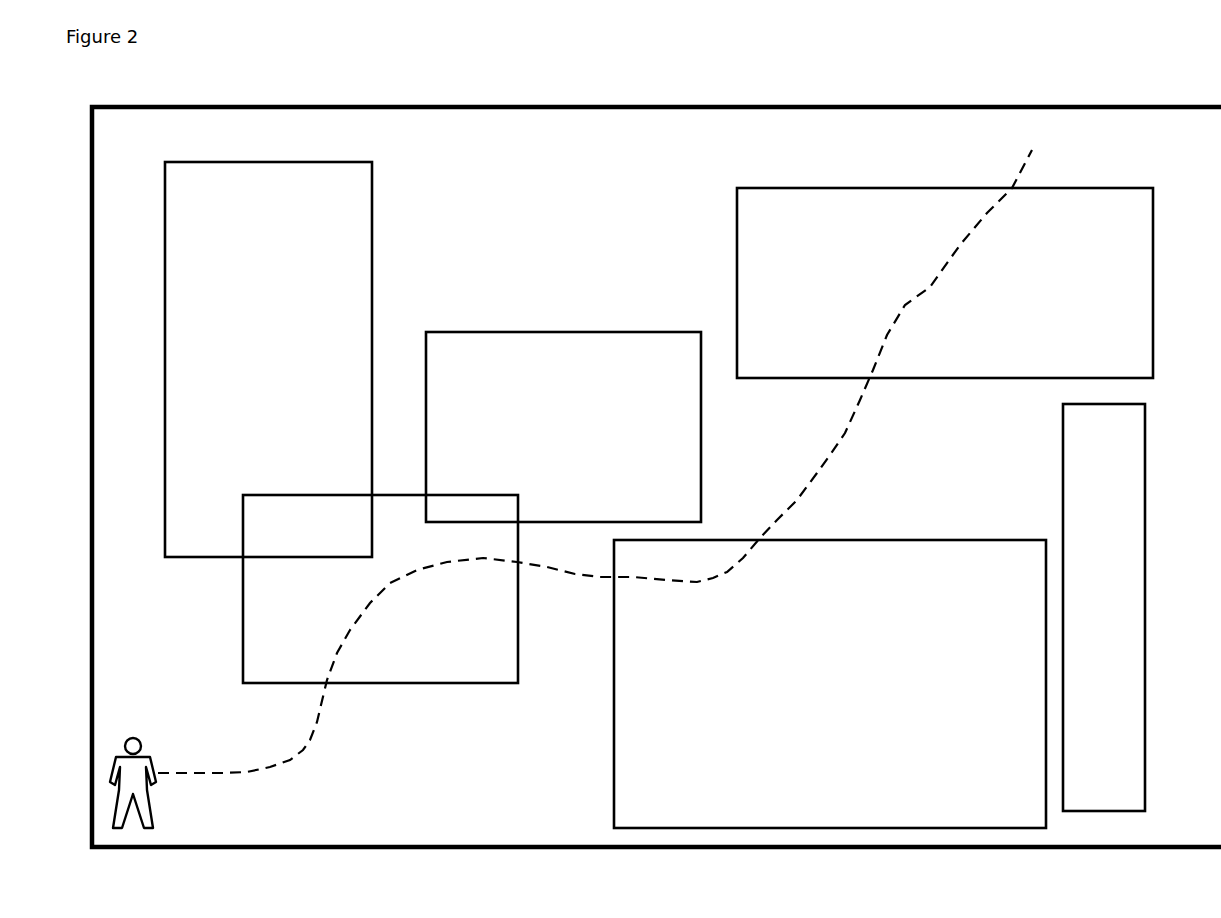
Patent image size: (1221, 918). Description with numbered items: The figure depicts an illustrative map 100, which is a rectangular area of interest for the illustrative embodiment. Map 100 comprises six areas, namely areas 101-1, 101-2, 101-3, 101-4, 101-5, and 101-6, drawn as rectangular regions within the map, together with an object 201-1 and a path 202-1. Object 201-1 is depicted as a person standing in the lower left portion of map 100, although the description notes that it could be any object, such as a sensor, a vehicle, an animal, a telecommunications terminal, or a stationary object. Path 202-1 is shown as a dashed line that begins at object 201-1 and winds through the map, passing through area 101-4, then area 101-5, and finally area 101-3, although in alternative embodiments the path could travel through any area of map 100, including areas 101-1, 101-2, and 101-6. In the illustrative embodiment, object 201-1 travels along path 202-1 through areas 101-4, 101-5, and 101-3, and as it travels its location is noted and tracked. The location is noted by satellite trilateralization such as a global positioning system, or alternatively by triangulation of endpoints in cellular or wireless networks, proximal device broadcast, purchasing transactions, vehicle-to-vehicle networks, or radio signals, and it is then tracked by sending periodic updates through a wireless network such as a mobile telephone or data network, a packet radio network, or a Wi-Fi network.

The map 100 is at (273, 106).
The area 101-1 is at (337, 161).
The area 101-2 is at (598, 331).
The area 101-3 is at (1118, 187).
The area 101-4 is at (435, 684).
The area 101-5 is at (893, 539).
The area 101-6 is at (1063, 484).
The object 201-1 is at (128, 736).
The path 202-1 is at (830, 455).